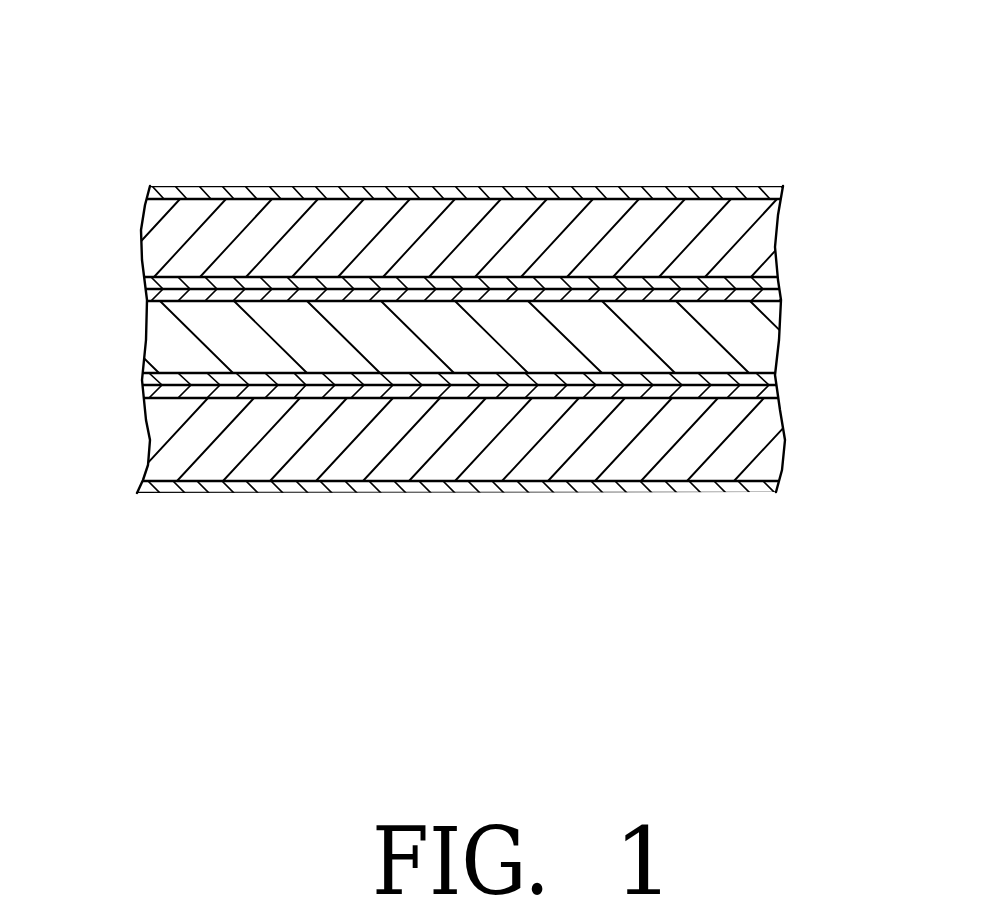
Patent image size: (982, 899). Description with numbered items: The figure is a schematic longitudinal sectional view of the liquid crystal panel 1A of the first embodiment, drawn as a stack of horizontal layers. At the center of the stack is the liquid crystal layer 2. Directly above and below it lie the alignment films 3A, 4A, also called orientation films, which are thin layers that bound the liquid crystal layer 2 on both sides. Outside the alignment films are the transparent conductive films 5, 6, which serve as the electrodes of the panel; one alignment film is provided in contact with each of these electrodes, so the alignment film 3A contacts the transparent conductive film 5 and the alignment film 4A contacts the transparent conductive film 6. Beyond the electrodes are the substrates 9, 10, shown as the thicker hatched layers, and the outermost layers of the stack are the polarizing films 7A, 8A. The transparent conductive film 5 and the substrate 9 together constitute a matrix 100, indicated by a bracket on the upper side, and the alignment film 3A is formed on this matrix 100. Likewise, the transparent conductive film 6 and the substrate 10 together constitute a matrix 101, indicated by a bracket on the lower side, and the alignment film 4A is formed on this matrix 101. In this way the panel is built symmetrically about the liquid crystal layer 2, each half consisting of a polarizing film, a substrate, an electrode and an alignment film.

The liquid crystal panel 1A is at (724, 101).
The liquid crystal layer 2 is at (167, 338).
The alignment film 3A is at (776, 295).
The alignment film 4A is at (772, 381).
The transparent conductive film 5 is at (778, 283).
The transparent conductive film 6 is at (778, 392).
The polarizing film 7A is at (783, 191).
The polarizing film 8A is at (772, 486).
The substrate 9 is at (167, 238).
The substrate 10 is at (170, 438).
The matrix 100 is at (465, 244).
The matrix 101 is at (465, 433).